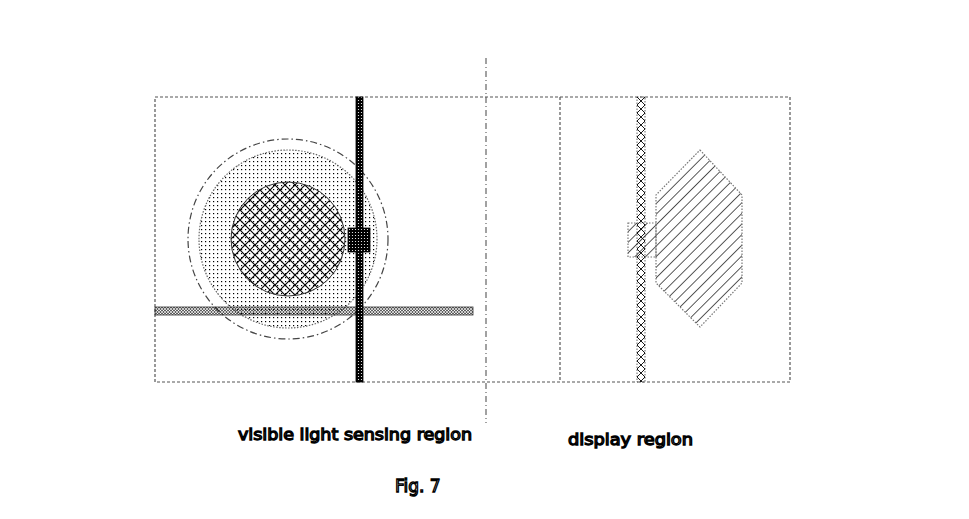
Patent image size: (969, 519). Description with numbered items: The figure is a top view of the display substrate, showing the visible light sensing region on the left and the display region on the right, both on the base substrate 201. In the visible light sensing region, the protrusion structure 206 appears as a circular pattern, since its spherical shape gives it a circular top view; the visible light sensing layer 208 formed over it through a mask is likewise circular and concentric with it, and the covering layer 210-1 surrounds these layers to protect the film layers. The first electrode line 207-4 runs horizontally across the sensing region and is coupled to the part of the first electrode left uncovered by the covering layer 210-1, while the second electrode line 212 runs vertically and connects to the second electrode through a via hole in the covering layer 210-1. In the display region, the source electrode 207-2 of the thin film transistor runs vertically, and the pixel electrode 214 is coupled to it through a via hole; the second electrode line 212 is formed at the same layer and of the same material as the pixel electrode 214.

The base substrate 201 is at (728, 360).
The protrusion structure 206 is at (255, 237).
The source electrode 207-2 is at (638, 97).
The first electrode line 207-4 is at (177, 317).
The visible light sensing layer 208 is at (213, 210).
The covering layer 210-1 is at (218, 173).
The second electrode line 212 is at (357, 97).
The pixel electrode 214 is at (731, 229).